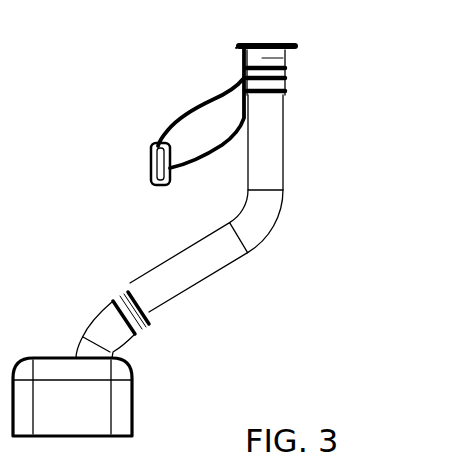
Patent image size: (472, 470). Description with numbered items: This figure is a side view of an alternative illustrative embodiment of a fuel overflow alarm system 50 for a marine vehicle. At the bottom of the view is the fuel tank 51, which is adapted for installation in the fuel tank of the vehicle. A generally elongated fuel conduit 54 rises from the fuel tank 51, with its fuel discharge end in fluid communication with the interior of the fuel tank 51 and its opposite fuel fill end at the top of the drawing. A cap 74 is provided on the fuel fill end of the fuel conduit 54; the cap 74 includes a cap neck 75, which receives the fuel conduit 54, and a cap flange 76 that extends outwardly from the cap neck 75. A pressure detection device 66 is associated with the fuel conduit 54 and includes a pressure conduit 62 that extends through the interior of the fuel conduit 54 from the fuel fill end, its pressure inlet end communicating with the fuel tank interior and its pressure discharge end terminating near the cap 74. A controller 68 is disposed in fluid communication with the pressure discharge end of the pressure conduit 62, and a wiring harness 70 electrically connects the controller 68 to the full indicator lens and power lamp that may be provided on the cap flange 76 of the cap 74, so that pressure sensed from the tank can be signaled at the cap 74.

The fuel overflow alarm system 50 is at (362, 70).
The fuel tank 51 is at (133, 409).
The fuel conduit 54 is at (262, 225).
The pressure conduit 62 is at (214, 151).
The pressure detection device 66 is at (107, 108).
The controller 68 is at (142, 174).
The wiring harness 70 is at (183, 106).
The cap 74 is at (296, 39).
The cap neck 75 is at (288, 56).
The cap flange 76 is at (238, 47).